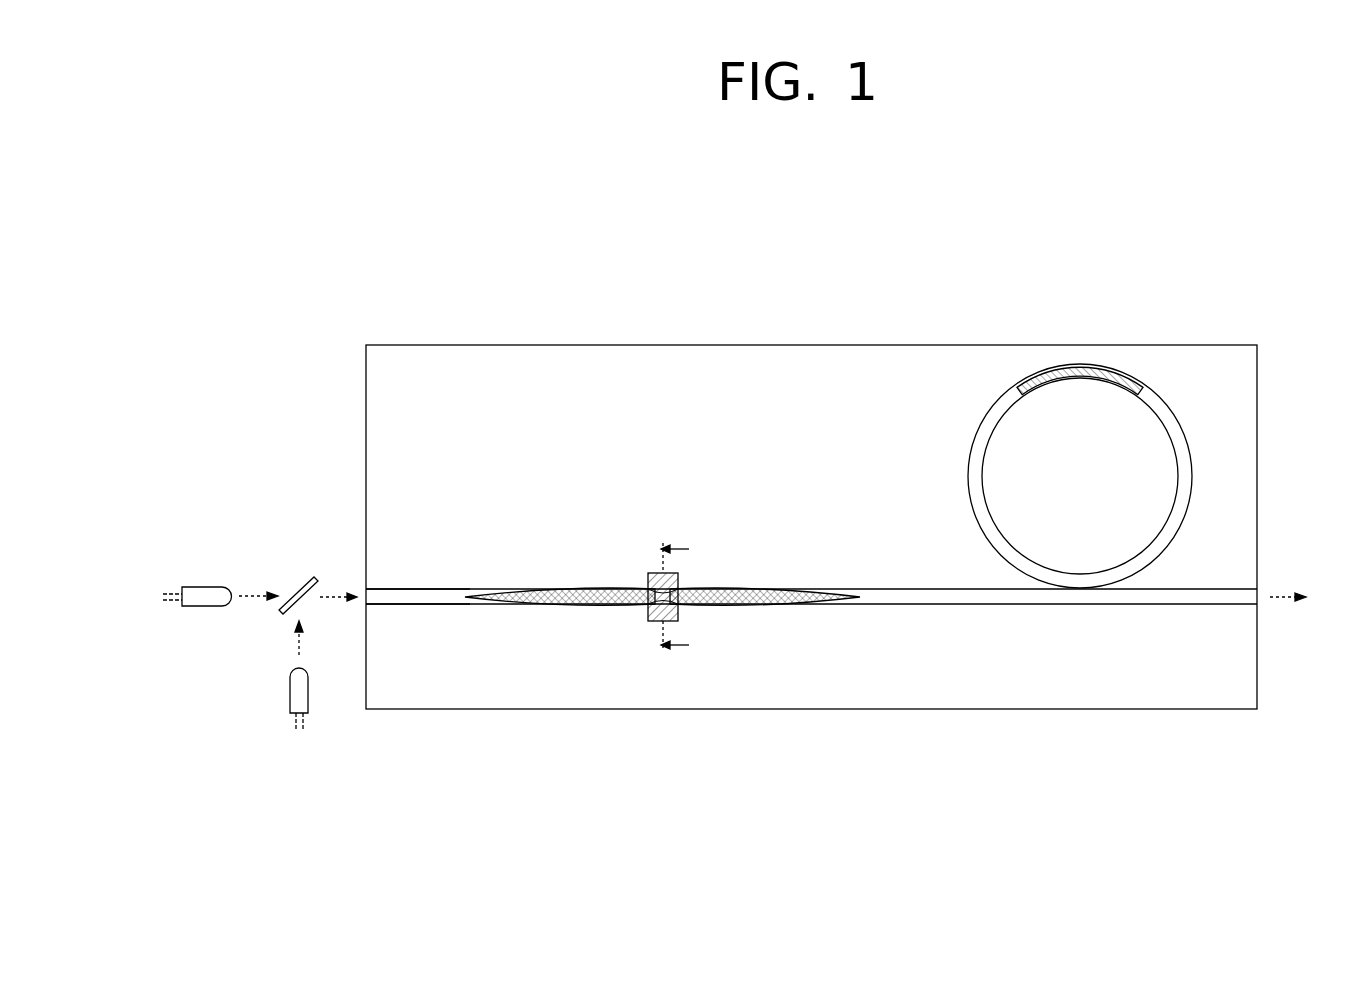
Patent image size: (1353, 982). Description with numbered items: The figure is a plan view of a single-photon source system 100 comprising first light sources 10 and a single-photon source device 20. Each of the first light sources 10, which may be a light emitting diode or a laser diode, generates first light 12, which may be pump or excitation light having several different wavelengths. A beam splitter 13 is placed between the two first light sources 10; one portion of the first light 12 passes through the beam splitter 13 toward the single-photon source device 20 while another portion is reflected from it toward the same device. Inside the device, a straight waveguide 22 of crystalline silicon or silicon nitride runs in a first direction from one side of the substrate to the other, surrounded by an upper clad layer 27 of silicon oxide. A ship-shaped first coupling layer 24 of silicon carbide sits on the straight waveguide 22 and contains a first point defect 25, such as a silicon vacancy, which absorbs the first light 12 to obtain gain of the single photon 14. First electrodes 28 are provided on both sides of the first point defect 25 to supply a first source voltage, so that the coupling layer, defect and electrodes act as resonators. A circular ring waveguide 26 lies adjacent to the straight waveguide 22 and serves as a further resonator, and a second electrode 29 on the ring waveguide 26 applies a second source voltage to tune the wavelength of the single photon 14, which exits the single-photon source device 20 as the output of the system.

The first light sources 10 is at (200, 586).
The first light 12 is at (250, 586).
The beam splitter 13 is at (296, 590).
The single photon 14 is at (1282, 590).
The single-photon source device 20 is at (917, 279).
The straight waveguide 22 is at (437, 593).
The first coupling layer 24 is at (575, 592).
The first point defect 25 is at (657, 598).
The ring waveguide 26 is at (990, 424).
The upper clad layer 27 is at (752, 369).
The first electrodes 28 is at (652, 573).
The second electrode 29 is at (1029, 383).
The single-photon source system 100 is at (1148, 292).